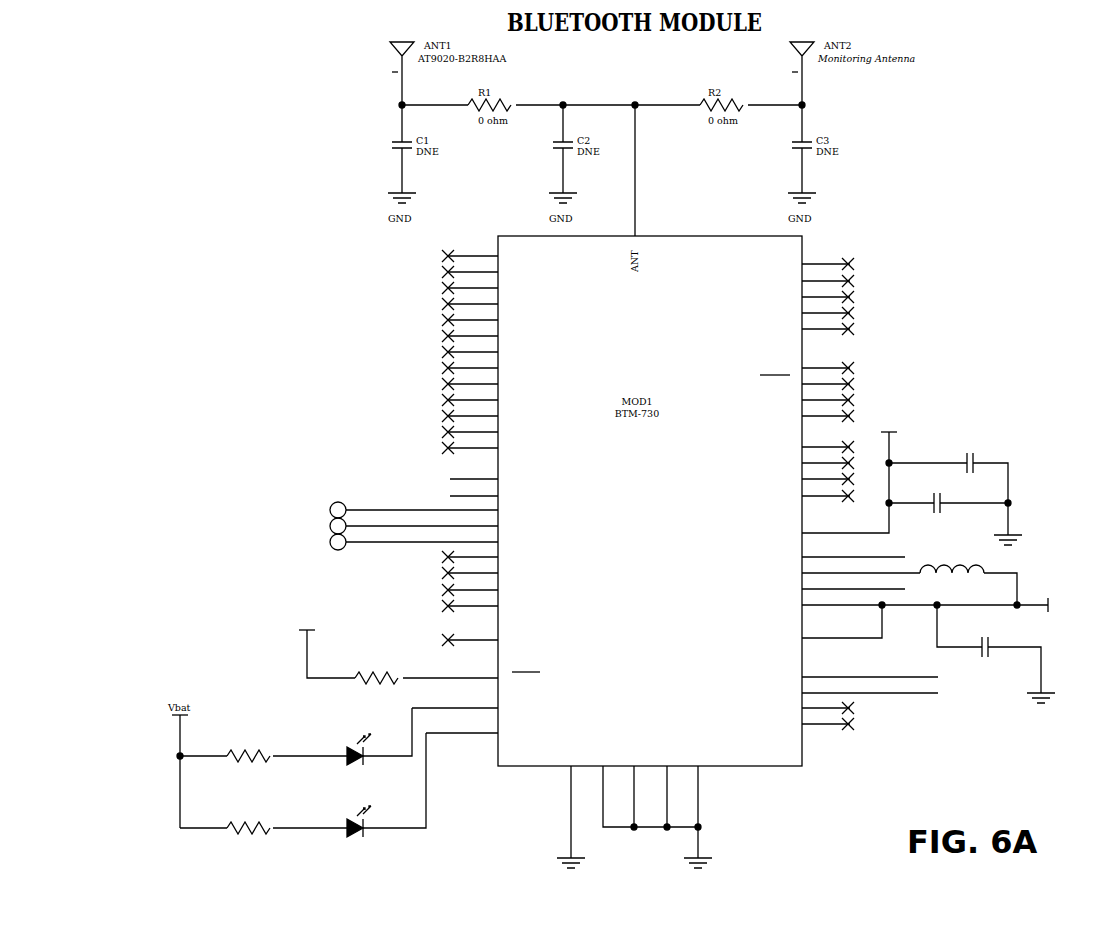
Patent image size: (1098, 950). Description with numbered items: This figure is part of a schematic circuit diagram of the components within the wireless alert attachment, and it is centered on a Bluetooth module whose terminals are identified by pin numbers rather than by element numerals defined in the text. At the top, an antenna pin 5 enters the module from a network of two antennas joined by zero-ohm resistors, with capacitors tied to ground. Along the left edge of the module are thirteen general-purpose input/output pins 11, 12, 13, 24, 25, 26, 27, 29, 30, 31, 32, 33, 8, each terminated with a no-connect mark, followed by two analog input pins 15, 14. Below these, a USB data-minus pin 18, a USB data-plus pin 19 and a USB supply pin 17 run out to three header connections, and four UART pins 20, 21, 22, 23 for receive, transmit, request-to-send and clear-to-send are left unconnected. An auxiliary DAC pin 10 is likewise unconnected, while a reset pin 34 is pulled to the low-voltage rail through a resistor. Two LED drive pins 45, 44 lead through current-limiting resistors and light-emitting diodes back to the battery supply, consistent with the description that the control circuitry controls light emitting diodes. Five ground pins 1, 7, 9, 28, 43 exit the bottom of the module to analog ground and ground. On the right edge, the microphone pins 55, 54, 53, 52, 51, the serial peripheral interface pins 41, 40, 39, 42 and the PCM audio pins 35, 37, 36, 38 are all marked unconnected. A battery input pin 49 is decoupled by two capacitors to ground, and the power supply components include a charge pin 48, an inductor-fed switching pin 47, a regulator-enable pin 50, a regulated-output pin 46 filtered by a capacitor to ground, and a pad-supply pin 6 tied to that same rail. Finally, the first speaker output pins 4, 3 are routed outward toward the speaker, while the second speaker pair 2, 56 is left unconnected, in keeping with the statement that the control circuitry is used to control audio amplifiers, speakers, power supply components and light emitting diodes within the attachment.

The ANT pin 5 is at (630, 170).
The PIO0 pin 11 is at (489, 254).
The PIO1 pin 12 is at (489, 270).
The PIO2 pin 13 is at (489, 286).
The PIO3 pin 24 is at (489, 302).
The PIO4 pin 25 is at (489, 318).
The PIO5 pin 26 is at (489, 334).
The PIO6 pin 27 is at (489, 350).
The PIO7 pin 29 is at (489, 366).
The PIO8 pin 30 is at (489, 382).
The PIO9 pin 31 is at (489, 398).
The PIO10 pin 32 is at (492, 414).
The PIO11 pin 33 is at (492, 430).
The PIO12 pin 8 is at (492, 446).
The AIO1 pin 15 is at (493, 476).
The AIO0 pin 14 is at (493, 493).
The USB_DN pin 18 is at (427, 509).
The USB_DP pin 19 is at (426, 525).
The VDD_USB pin 17 is at (430, 541).
The UART_RX pin 20 is at (500, 555).
The UART_TX pin 21 is at (500, 571).
The UART_RTS pin 22 is at (503, 588).
The UART_CTS pin 23 is at (503, 604).
The AUX_DAC pin 10 is at (501, 638).
The RESET pin 34 is at (422, 657).
The LED0 pin 45 is at (359, 742).
The LED1 pin 44 is at (359, 791).
The GND pin 1 is at (571, 809).
The GND pin 7 is at (645, 779).
The GND pin 9 is at (631, 781).
The GND pin 28 is at (663, 781).
The GND pin 43 is at (698, 809).
The MIC_A_N pin 55 is at (799, 262).
The MIC_A_P pin 54 is at (800, 279).
The MIC_B_N pin 53 is at (799, 295).
The MIC_B_P pin 52 is at (800, 311).
The MIC_BIAS pin 51 is at (797, 327).
The SPI_CLK pin 41 is at (801, 366).
The SPI_CS pin 40 is at (804, 382).
The SPI_MOSI pin 39 is at (797, 398).
The SPI_MISO pin 42 is at (797, 414).
The PCM_CLK pin 35 is at (797, 445).
The PCM_SYNC pin 37 is at (794, 461).
The PCM_IN pin 36 is at (802, 477).
The PCM_OUT pin 38 is at (797, 494).
The VBAT pin 49 is at (892, 492).
The VDD_CHG pin 48 is at (822, 554).
The LX pin 47 is at (897, 578).
The VREGENABLE_H pin 50 is at (805, 586).
The 1V8 pin 46 is at (922, 659).
The VDD_PADS pin 6 is at (779, 624).
The SPKR_A_P pin 4 is at (839, 674).
The SPKR_A_N pin 3 is at (838, 690).
The SPKR_B_P pin 2 is at (797, 706).
The SPKR_B_N pin 56 is at (796, 722).